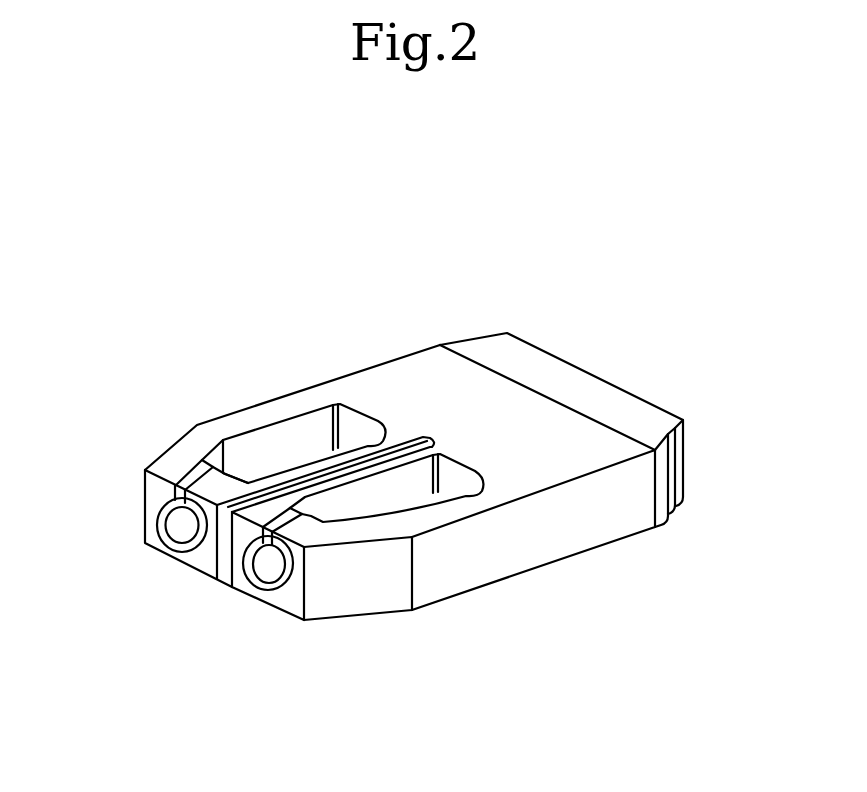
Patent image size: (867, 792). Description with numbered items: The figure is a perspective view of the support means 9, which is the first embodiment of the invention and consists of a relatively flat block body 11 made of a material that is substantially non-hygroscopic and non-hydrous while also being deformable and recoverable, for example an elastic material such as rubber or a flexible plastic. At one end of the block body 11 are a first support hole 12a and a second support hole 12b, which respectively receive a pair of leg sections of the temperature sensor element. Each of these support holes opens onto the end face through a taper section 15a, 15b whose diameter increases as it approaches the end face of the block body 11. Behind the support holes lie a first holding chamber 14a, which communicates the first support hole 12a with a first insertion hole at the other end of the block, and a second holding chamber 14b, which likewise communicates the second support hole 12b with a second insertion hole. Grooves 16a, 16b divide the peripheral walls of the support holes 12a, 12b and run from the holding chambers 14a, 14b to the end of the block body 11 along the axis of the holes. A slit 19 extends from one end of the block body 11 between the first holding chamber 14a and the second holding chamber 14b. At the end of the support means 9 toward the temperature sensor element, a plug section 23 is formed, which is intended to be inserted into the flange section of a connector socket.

The support means 9 is at (400, 484).
The block body 11 is at (541, 579).
The plug section 23 is at (597, 394).
The slit 19 is at (323, 473).
The first holding chamber 14a is at (268, 437).
The second holding chamber 14b is at (422, 486).
The groove 16a is at (198, 476).
The groove 16b is at (300, 520).
The taper section 15a is at (160, 530).
The taper section 15b is at (250, 582).
The first support hole 12a is at (183, 540).
The second support hole 12b is at (272, 580).